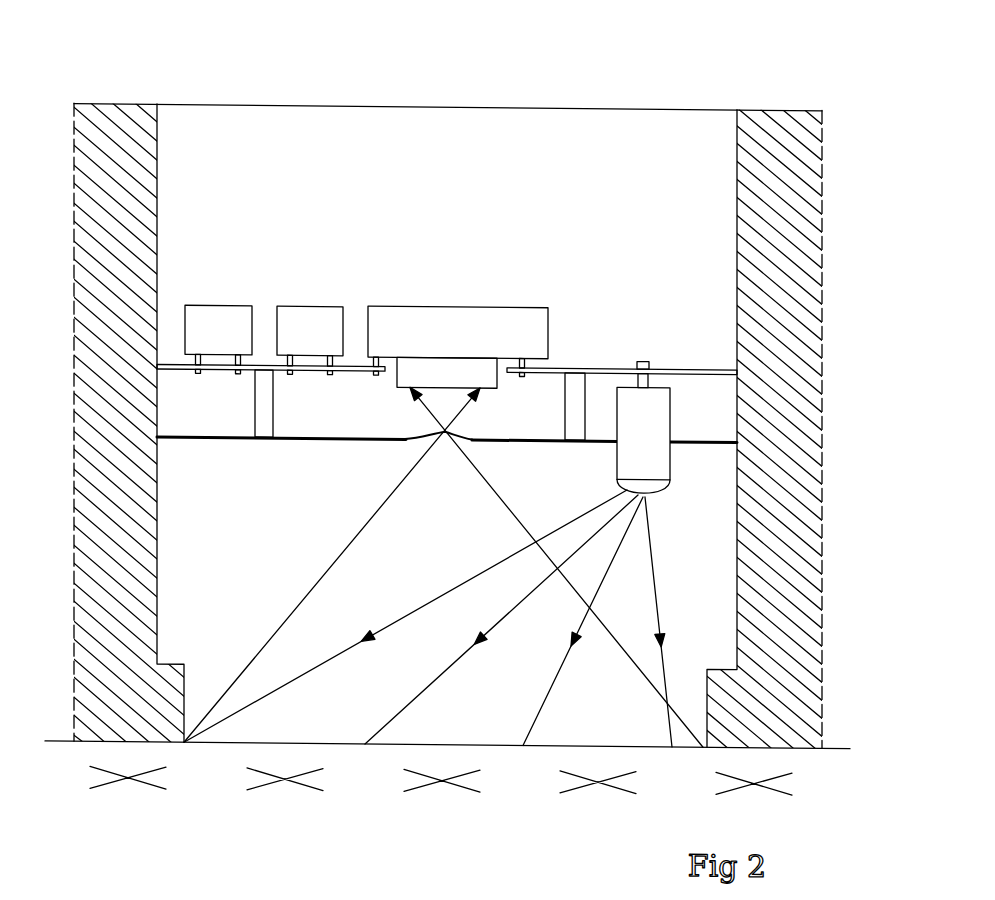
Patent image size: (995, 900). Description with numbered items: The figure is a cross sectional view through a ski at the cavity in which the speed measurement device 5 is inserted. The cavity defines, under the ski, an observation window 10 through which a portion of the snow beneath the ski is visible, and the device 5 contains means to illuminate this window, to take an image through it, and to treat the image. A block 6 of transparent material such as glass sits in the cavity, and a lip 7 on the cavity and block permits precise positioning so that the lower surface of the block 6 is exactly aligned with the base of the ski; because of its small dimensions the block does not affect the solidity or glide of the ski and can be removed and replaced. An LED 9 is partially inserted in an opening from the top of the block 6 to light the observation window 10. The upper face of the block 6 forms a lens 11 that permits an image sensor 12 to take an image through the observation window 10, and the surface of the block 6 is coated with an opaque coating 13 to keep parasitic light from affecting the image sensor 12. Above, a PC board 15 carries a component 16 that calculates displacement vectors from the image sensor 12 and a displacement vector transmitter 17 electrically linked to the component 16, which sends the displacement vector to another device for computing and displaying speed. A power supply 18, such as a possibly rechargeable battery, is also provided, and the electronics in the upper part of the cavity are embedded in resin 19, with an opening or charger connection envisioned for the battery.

The speed measurement device 5 is at (667, 80).
The block 6 is at (713, 550).
The lip 7 is at (718, 659).
The LED 9 is at (653, 460).
The observation window 10 is at (804, 775).
The lens 11 is at (446, 430).
The image sensor 12 is at (429, 370).
The opaque coating 13 is at (718, 435).
The PC board 15 is at (705, 364).
The component 16 is at (507, 330).
The displacement vector transmitter 17 is at (310, 318).
The power supply 18 is at (224, 320).
The resin 19 is at (305, 131).